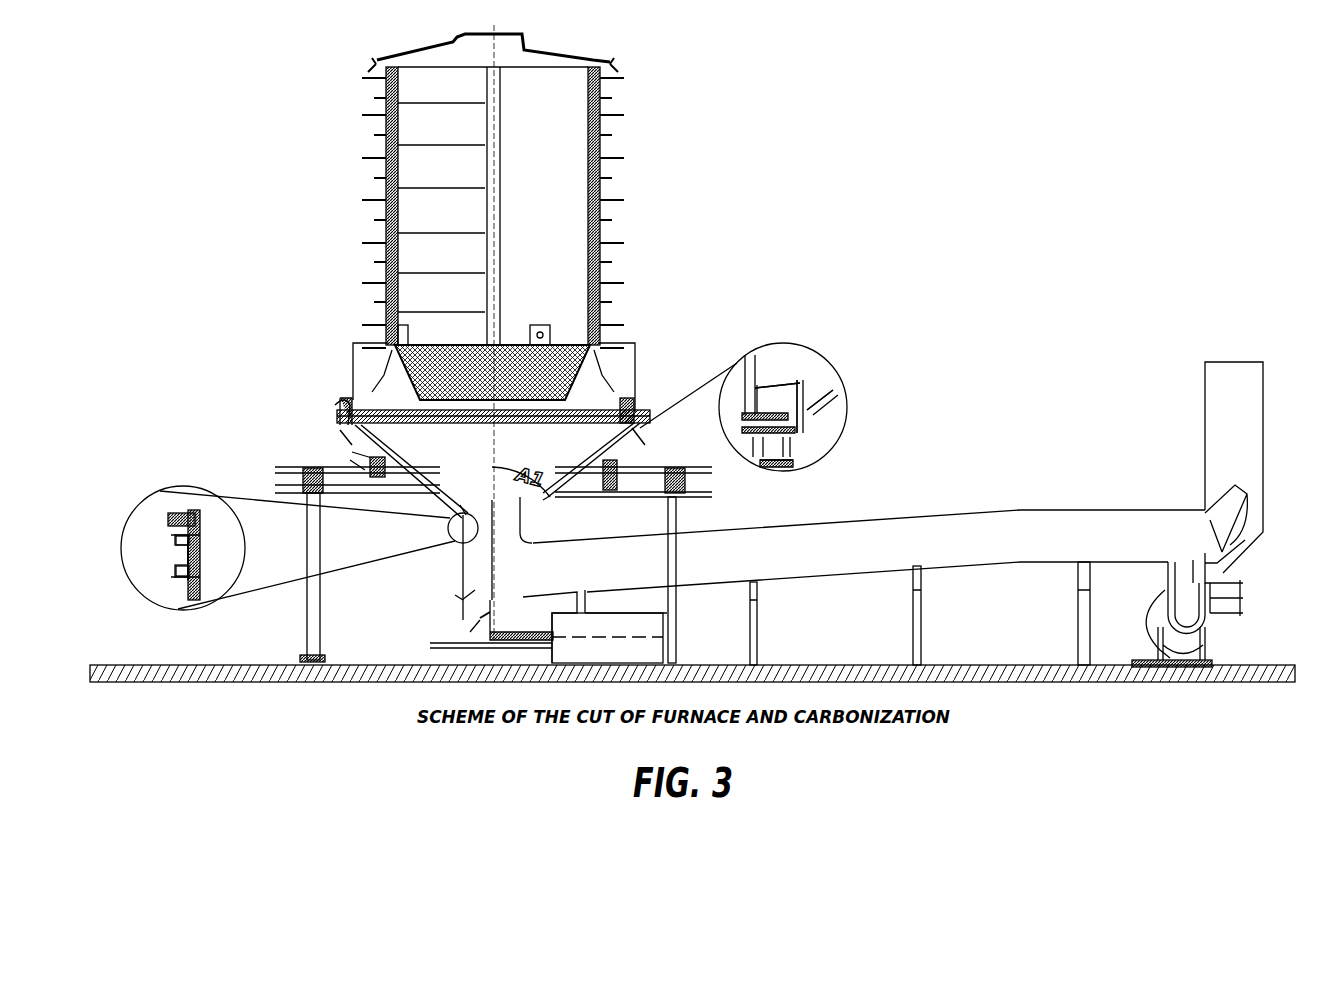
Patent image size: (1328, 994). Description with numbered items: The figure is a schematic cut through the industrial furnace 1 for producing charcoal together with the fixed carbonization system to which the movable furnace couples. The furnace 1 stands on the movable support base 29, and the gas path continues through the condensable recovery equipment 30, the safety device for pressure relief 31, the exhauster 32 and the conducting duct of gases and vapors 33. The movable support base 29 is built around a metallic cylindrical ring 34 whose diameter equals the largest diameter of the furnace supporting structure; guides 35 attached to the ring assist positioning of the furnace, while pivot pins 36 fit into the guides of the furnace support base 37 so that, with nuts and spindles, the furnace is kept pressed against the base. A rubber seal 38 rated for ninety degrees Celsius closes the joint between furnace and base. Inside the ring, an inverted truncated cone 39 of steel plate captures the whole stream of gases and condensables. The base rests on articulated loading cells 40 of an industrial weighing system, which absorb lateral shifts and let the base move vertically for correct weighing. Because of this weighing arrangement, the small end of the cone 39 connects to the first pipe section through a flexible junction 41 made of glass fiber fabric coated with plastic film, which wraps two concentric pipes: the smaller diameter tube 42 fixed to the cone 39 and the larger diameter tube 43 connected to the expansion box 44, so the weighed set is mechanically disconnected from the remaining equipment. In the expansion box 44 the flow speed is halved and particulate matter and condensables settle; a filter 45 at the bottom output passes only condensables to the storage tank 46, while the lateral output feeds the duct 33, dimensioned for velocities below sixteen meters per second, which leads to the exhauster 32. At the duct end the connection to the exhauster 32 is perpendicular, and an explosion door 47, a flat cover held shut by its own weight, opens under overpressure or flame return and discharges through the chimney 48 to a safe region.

The industrial furnace 1 is at (553, 52).
The movable support base 29 is at (790, 455).
The condensable recovery equipment 30 is at (463, 606).
The safety device for pressure relief 31 is at (1243, 488).
The exhauster 32 is at (1212, 617).
The conducting duct of gases and vapors 33 is at (1040, 508).
The cylindrical ring 34 is at (343, 443).
The guides 35 is at (340, 425).
The pivot pins 36 is at (805, 385).
The furnace support base 37 is at (775, 390).
The seal 38 is at (795, 430).
The inverted truncated cone 39 is at (543, 505).
The articulated loading cells 40 is at (350, 462).
The flexible junction 41 is at (188, 556).
The smaller diameter tube 42 is at (178, 540).
The larger diameter tube 43 is at (180, 580).
The expansion box 44 is at (460, 592).
The filter 45 is at (480, 620).
The storage tank 46 is at (430, 647).
The explosion door 47 is at (1222, 572).
The chimney 48 is at (1263, 432).